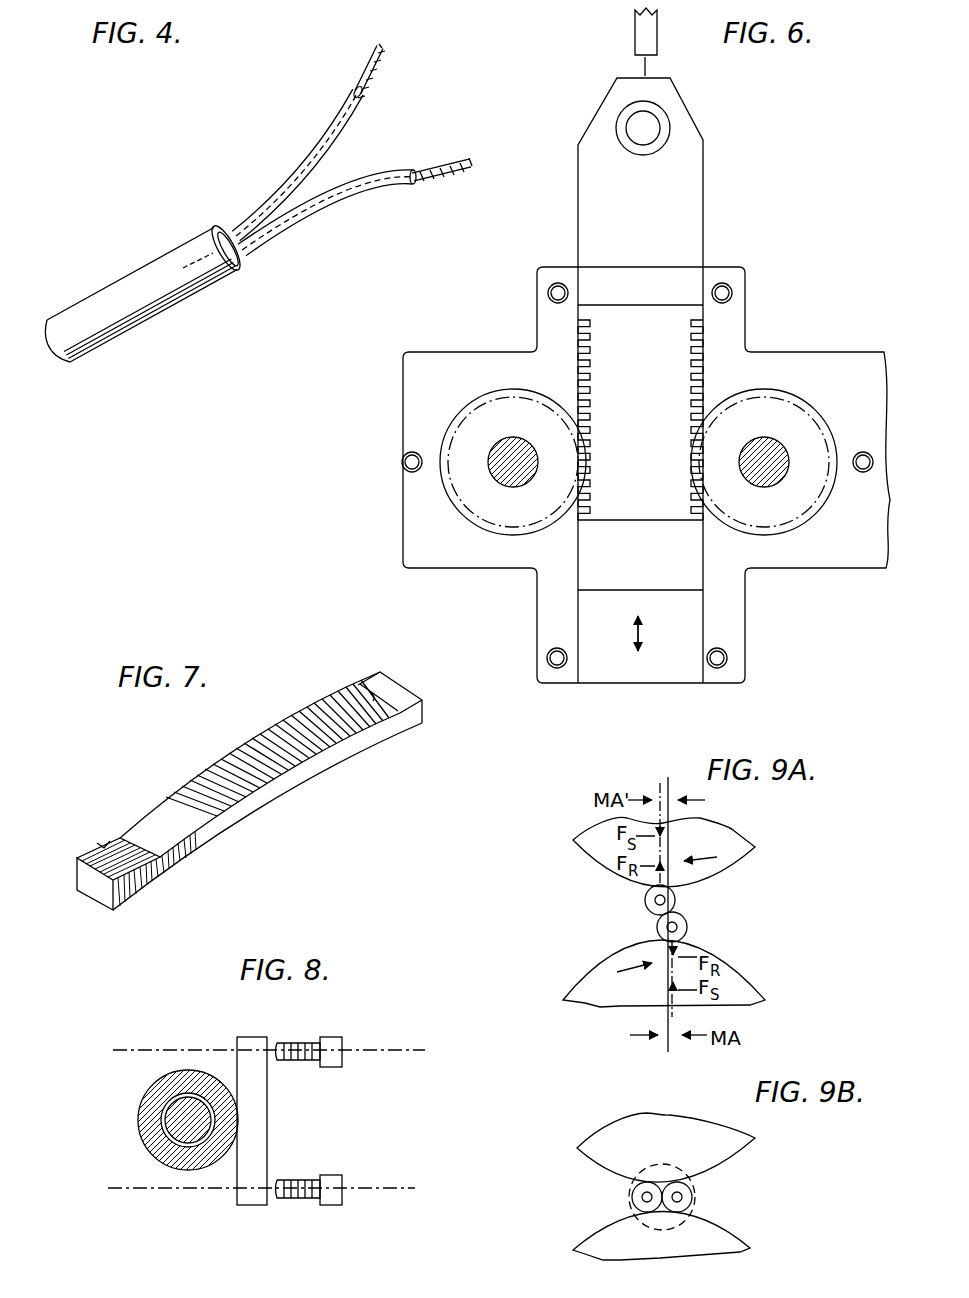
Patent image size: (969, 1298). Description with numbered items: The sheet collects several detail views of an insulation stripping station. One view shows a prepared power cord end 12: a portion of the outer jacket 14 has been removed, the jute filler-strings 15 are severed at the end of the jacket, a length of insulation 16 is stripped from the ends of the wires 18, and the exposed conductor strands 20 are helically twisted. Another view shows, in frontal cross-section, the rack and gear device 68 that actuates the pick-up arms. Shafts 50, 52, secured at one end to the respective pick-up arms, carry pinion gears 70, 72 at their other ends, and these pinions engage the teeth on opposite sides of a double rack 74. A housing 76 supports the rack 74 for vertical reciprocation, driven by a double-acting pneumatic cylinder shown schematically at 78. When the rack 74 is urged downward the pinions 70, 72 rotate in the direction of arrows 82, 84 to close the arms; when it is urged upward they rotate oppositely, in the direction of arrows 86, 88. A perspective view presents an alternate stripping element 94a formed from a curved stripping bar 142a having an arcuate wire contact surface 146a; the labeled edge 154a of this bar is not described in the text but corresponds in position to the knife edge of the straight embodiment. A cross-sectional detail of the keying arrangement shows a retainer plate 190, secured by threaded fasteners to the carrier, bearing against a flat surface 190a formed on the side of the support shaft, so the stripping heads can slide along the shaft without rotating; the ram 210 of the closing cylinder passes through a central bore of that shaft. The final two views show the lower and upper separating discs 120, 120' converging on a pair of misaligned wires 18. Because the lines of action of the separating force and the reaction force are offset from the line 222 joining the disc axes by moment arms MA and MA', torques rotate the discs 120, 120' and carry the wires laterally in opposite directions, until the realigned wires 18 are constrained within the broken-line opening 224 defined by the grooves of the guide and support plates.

In FIG. 4, the power cord end 12 is at (145, 170).
In FIG. 4, the outer jacket 14 is at (133, 312).
In FIG. 4, the jute filler-strings 15 is at (243, 249).
In FIG. 4, the insulation 16 is at (367, 183).
In FIG. 4, the wires 18 is at (248, 232).
In FIG. 9A, the wires 18 is at (657, 927).
In FIG. 9B, the wires 18 is at (640, 1205).
In FIG. 4, the conductor strands 20 is at (450, 160).
In FIG. 6, the rack and gear device 68 is at (522, 302).
In FIG. 6, the pinion gear 70 is at (528, 517).
In FIG. 6, the pinion gear 72 is at (755, 519).
In FIG. 6, the double rack 74 is at (654, 432).
In FIG. 6, the housing 76 is at (735, 379).
In FIG. 6, the double-acting pneumatic cylinder 78 is at (628, 30).
In FIG. 6, the arrow 82 is at (557, 438).
In FIG. 6, the arrow 84 is at (722, 442).
In FIG. 6, the arrow 86 is at (470, 445).
In FIG. 6, the arrow 88 is at (810, 438).
In FIG. 6, the shaft 50 is at (500, 473).
In FIG. 6, the shaft 52 is at (770, 479).
In FIG. 7, the curved stripping bar 142a is at (380, 728).
In FIG. 7, the arcuate wire contact surface 146a is at (356, 710).
In FIG. 7, the rack teeth 154a is at (182, 786).
In FIG. 7, the stripping element 94a is at (268, 808).
In FIG. 8, the retainer plate 190 is at (258, 1130).
In FIG. 8, the flat surface 190a is at (237, 1093).
In FIG. 8, the ram 210 is at (185, 1133).
In FIG. 9A, the separating disc 120' is at (697, 851).
In FIG. 9B, the separating disc 120' is at (702, 1147).
In FIG. 9A, the separating disc 120 is at (664, 973).
In FIG. 9B, the separating disc 120 is at (696, 1235).
In FIG. 9A, the line between disc axes 222 is at (676, 903).
In FIG. 9B, the opening 224 is at (693, 1197).